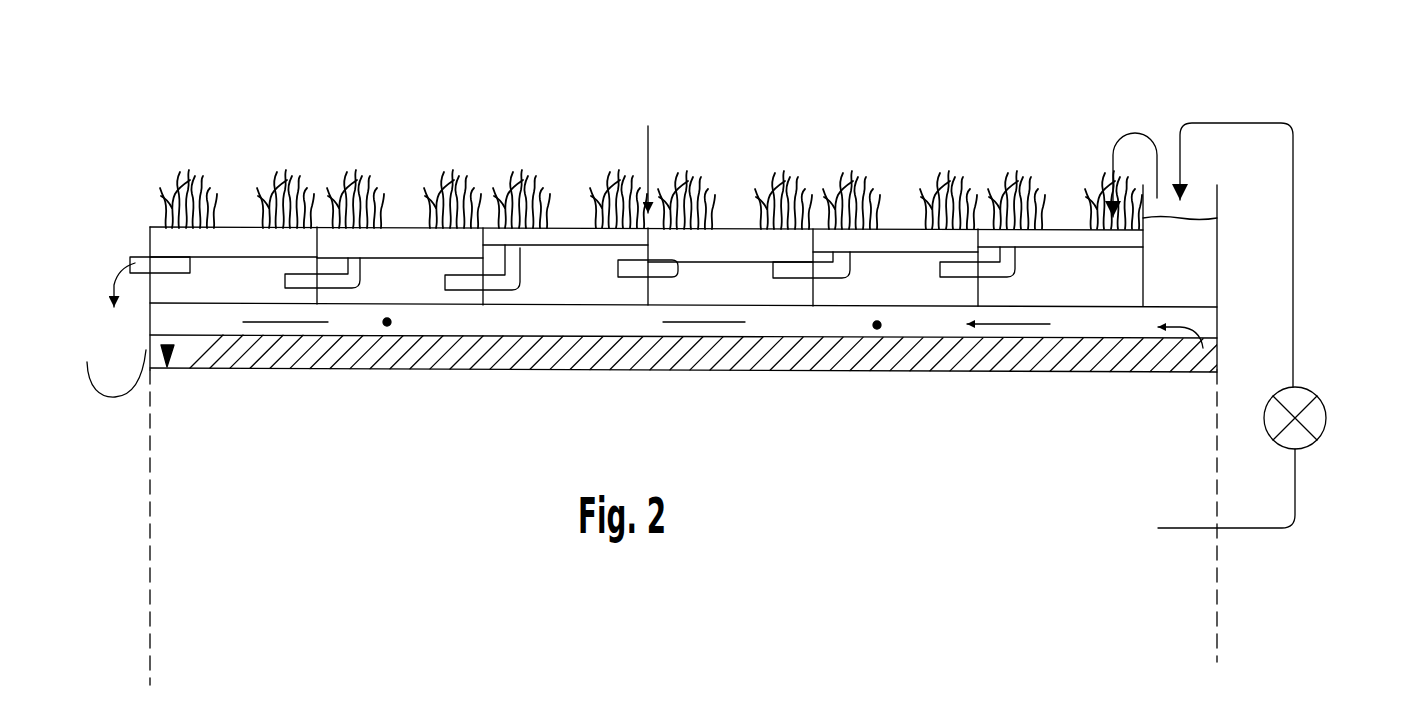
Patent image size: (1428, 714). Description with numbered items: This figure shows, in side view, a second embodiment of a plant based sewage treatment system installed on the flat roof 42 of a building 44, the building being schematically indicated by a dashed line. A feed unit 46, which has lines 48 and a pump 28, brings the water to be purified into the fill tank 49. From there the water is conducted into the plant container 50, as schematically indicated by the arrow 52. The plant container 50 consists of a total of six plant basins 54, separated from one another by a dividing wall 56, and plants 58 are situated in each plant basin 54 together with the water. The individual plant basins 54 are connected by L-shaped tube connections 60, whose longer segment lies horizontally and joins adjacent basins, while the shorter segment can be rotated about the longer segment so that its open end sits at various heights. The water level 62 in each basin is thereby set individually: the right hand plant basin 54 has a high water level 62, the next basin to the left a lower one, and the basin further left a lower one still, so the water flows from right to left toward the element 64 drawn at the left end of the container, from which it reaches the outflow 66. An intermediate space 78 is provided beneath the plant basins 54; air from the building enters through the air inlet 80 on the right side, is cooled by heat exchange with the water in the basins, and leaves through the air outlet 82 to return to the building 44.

The pump 28 is at (1308, 445).
The roof 42 is at (763, 350).
The building 44 is at (1213, 425).
The feed unit 46 is at (1317, 363).
The lines 48 is at (1250, 530).
The fill tank 49 is at (1190, 253).
The plant container 50 is at (648, 155).
The arrow 52 is at (1135, 132).
The plant basin 54 is at (233, 283).
The dividing wall 56 is at (317, 287).
The plants 58 is at (278, 163).
The tube connection 60 is at (300, 283).
The water level 62 is at (232, 252).
The outlet 64 is at (143, 260).
The outflow 66 is at (104, 347).
The intermediate space 78 is at (387, 327).
The air inlet 80 is at (1195, 363).
The air outlet 82 is at (192, 325).